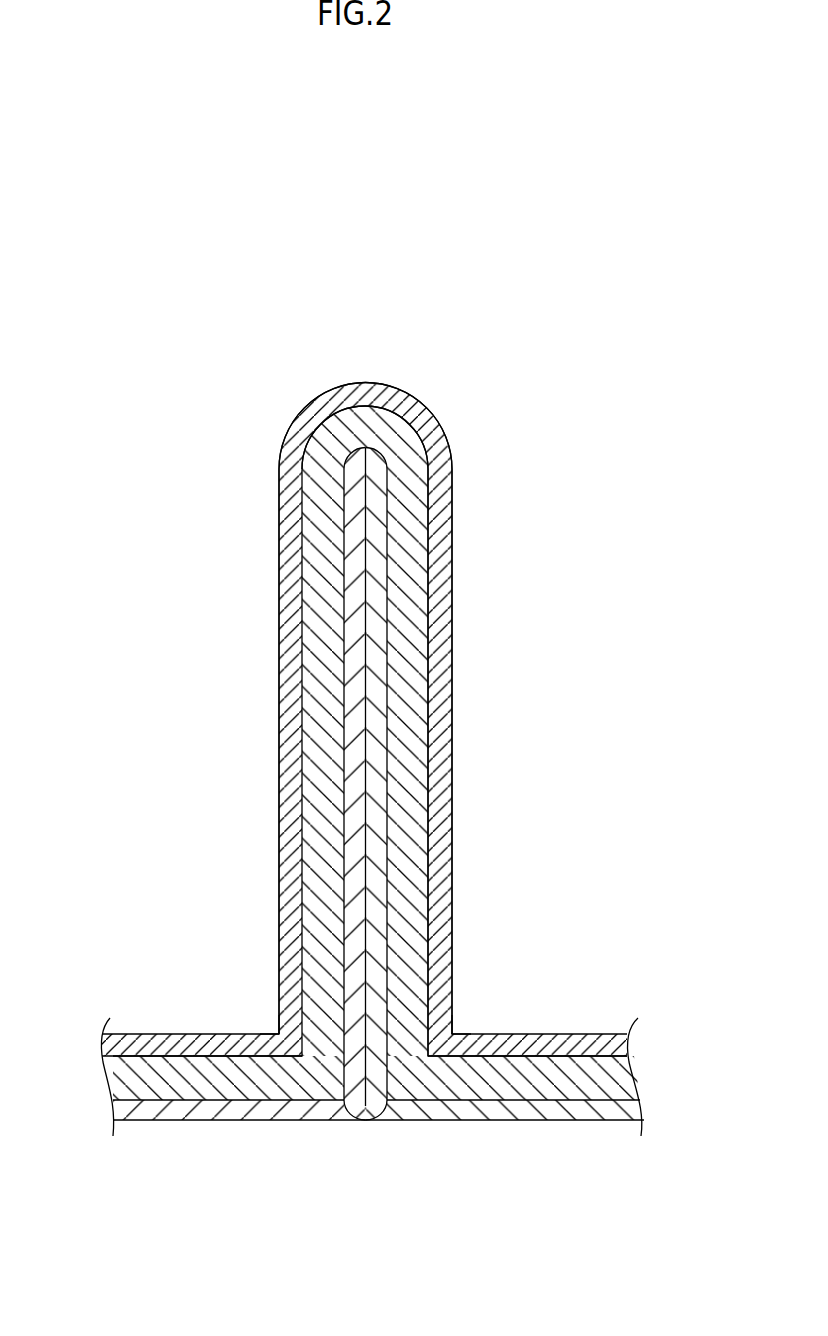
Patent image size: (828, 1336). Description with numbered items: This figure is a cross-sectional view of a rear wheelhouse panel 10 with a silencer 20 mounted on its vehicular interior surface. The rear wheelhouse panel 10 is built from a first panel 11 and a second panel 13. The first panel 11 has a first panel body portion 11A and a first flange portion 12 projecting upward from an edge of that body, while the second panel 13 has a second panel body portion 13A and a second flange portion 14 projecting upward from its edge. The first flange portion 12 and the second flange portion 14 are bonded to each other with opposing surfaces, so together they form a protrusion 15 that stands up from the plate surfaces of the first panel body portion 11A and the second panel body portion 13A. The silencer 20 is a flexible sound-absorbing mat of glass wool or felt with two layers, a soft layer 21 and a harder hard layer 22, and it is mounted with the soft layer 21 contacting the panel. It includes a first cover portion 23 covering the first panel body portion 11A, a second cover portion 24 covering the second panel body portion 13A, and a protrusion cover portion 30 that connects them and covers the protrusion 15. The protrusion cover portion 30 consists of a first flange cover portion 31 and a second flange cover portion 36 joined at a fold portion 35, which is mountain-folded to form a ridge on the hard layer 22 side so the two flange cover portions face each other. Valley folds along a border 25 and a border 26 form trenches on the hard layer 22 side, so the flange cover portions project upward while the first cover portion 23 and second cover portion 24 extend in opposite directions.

The rear wheelhouse panel 10 is at (179, 1124).
The first panel 11 is at (130, 1110).
The first panel body portion 11A is at (243, 1110).
The first flange portion 12 is at (352, 1032).
The second panel 13 is at (618, 1113).
The second panel body portion 13A is at (520, 1112).
The second flange portion 14 is at (378, 1033).
The protrusion 15 is at (420, 1218).
The silencer 20 is at (467, 396).
The soft layer 21 is at (410, 640).
The hard layer 22 is at (443, 679).
The first cover portion 23 is at (167, 1034).
The second cover portion 24 is at (562, 1034).
The border 25 is at (278, 1034).
The border 26 is at (452, 1034).
The protrusion cover portion 30 is at (279, 492).
The first flange cover portion 31 is at (279, 772).
The fold portion 35 is at (360, 383).
The second flange cover portion 36 is at (452, 781).